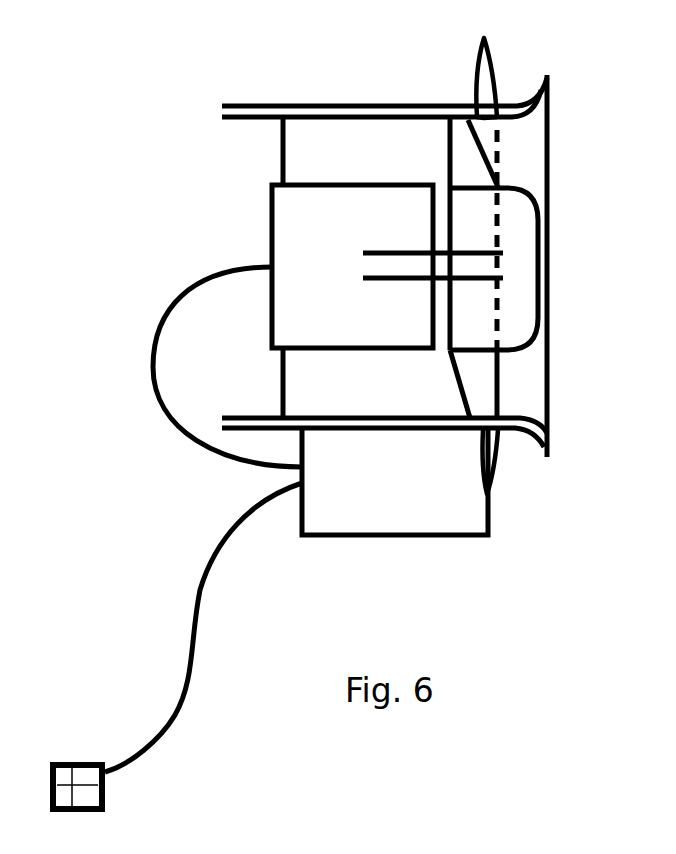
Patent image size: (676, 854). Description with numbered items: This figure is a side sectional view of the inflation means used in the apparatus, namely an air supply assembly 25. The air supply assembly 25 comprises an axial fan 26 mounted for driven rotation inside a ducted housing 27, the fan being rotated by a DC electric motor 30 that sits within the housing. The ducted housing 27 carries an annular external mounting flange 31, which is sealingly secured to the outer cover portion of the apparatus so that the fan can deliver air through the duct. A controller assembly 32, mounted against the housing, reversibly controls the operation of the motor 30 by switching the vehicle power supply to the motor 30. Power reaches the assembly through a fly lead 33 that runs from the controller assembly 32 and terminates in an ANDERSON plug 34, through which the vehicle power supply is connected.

The air supply assembly 25 is at (334, 73).
The axial fan 26 is at (470, 166).
The ducted housing 27 is at (522, 440).
The DC electric motor 30 is at (294, 227).
The annular external mounting flange 31 is at (497, 63).
The controller assembly 32 is at (398, 512).
The fly lead 33 is at (200, 640).
The ANDERSON plug 34 is at (80, 760).